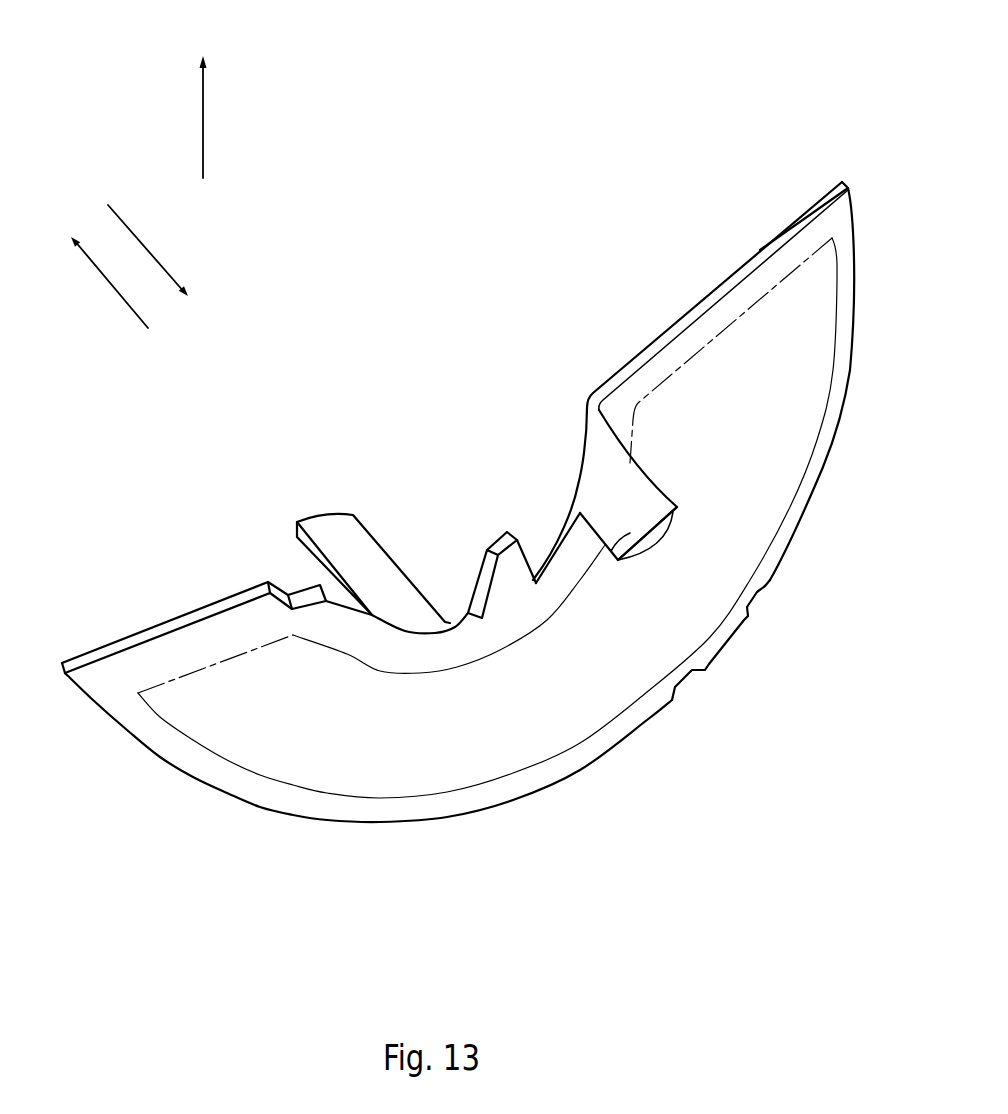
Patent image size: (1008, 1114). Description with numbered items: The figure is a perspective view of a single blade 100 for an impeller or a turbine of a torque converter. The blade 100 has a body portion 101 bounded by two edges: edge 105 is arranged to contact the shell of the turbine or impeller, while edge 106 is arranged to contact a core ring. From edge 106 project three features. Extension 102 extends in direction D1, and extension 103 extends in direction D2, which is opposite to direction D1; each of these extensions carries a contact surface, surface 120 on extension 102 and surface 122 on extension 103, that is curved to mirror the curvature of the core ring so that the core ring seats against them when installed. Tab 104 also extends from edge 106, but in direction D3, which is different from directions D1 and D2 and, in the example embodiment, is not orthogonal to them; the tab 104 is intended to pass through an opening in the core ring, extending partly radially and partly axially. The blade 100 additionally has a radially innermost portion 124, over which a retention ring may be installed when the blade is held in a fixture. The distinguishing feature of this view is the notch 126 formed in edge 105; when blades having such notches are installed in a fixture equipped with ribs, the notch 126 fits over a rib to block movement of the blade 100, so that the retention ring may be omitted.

The blade 100 is at (730, 67).
The body portion 101 is at (712, 285).
The extension 102 is at (659, 476).
The extension 103 is at (303, 558).
The tab 104 is at (497, 530).
The edge 105 is at (823, 463).
The edge 106 is at (570, 524).
The surface 120 is at (610, 563).
The surface 122 is at (380, 580).
The radially innermost portion 124 is at (795, 230).
The notch 126 is at (758, 597).
The direction D1 is at (140, 237).
The direction D2 is at (110, 283).
The direction D3 is at (205, 98).